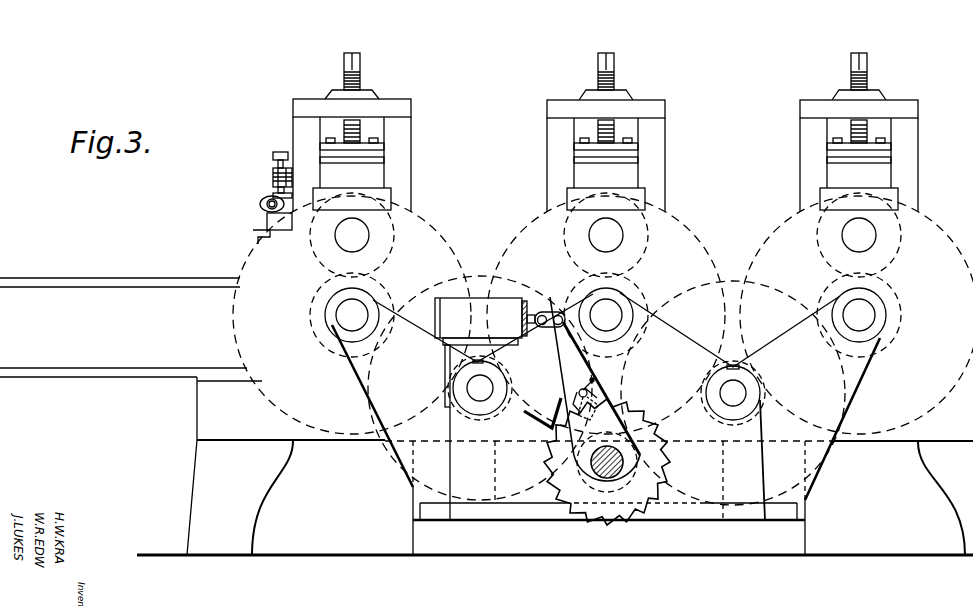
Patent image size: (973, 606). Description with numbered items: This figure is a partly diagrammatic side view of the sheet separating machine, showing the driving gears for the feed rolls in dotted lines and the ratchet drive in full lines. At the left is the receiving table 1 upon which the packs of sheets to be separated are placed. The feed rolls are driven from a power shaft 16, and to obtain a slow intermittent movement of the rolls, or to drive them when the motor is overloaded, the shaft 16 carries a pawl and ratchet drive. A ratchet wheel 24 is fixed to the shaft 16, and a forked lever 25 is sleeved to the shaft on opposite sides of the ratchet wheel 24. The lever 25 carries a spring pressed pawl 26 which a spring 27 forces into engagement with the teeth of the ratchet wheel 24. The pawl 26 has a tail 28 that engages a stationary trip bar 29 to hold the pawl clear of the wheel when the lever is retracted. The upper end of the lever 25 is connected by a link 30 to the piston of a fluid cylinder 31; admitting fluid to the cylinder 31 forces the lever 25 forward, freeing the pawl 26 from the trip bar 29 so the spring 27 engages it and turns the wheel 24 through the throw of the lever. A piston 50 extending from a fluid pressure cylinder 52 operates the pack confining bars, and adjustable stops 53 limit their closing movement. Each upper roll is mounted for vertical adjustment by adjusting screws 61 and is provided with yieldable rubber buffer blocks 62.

The receiving table 1 is at (3, 280).
The power shaft 16 is at (612, 478).
The ratchet wheel 24 is at (612, 522).
The forked lever 25 is at (563, 342).
The spring pressed pawl 26 is at (594, 390).
The spring 27 is at (590, 379).
The tail 28 is at (577, 392).
The trip bar 29 is at (560, 404).
The link 30 is at (545, 311).
The fluid cylinder 31 is at (500, 303).
The piston 50 is at (268, 221).
The fluid pressure cylinder 52 is at (260, 241).
The adjustable stop 53 is at (276, 165).
The adjusting screw 61 is at (360, 64).
The yieldable buffer block 62 is at (373, 176).